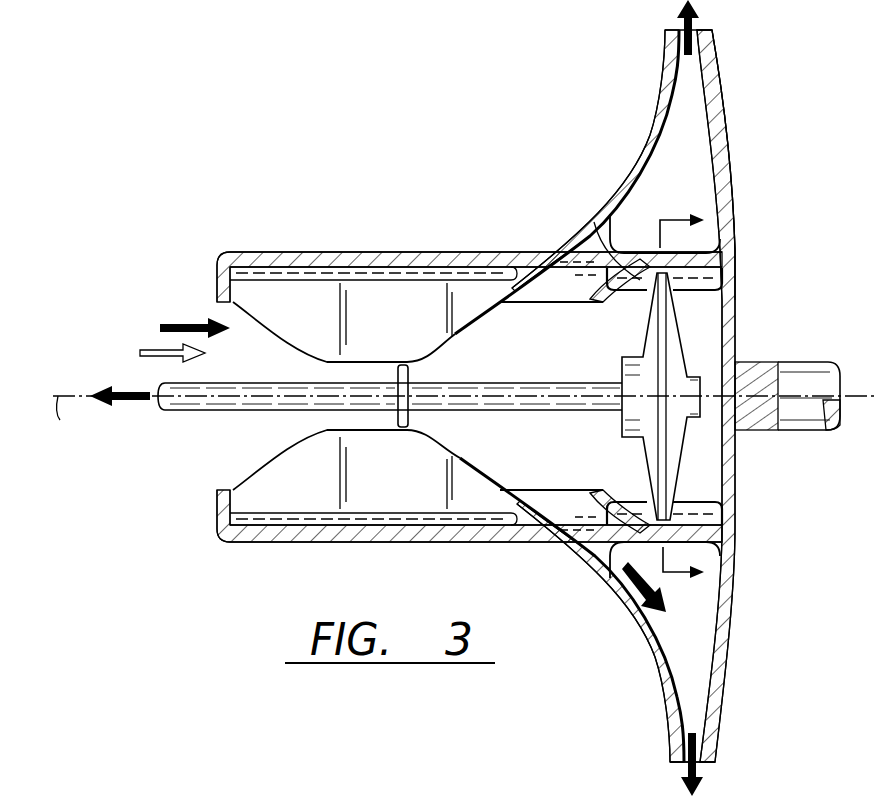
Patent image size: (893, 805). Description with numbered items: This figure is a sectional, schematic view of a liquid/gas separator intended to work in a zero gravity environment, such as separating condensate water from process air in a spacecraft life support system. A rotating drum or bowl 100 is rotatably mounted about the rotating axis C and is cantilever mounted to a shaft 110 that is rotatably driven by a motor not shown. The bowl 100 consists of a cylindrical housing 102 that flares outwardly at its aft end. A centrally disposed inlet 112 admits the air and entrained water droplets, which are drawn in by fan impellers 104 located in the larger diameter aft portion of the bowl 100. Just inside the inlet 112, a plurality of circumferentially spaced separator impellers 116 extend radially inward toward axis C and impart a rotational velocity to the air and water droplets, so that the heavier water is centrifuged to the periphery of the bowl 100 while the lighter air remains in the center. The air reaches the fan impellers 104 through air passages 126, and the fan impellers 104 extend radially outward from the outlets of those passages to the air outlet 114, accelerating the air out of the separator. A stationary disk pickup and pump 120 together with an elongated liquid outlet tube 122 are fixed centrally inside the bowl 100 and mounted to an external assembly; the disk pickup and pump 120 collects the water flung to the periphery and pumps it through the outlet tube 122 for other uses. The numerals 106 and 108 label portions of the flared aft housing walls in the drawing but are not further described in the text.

The rotating bowl 100 is at (476, 160).
The cylindrical housing 102 is at (627, 160).
The fan impellers 104 is at (690, 166).
The outer wall 106 is at (733, 196).
The inner wall 108 is at (743, 250).
The shaft 110 is at (813, 432).
The inlet 112 is at (220, 305).
The air outlet 114 is at (702, 762).
The separator impellers 116 is at (283, 492).
The disk pickup and pump 120 is at (680, 338).
The liquid outlet tube 122 is at (186, 412).
The air passages 126 is at (604, 215).